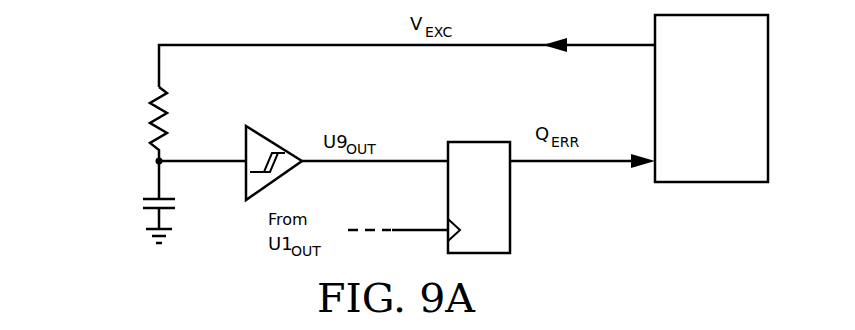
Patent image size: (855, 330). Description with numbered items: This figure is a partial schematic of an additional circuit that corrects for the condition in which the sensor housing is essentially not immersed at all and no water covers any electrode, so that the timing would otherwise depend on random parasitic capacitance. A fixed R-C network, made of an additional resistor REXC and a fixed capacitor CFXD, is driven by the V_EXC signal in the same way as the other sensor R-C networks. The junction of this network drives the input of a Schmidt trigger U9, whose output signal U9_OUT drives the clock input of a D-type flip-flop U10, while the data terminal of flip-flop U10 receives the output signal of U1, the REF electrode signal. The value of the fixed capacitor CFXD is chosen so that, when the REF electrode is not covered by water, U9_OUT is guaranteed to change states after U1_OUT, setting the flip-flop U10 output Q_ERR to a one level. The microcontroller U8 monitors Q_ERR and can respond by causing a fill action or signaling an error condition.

The microcontroller U8 is at (711, 98).
The Schmidt trigger U9 is at (262, 130).
The D-type flip-flop U10 is at (471, 142).
The resistor REXC is at (155, 100).
The fixed capacitor CFXD is at (155, 197).